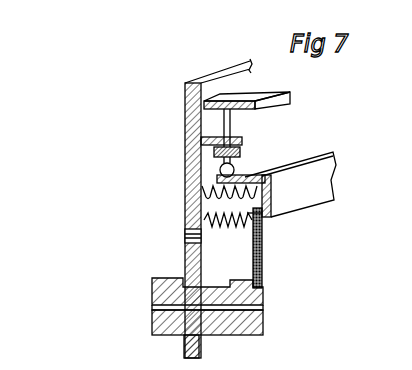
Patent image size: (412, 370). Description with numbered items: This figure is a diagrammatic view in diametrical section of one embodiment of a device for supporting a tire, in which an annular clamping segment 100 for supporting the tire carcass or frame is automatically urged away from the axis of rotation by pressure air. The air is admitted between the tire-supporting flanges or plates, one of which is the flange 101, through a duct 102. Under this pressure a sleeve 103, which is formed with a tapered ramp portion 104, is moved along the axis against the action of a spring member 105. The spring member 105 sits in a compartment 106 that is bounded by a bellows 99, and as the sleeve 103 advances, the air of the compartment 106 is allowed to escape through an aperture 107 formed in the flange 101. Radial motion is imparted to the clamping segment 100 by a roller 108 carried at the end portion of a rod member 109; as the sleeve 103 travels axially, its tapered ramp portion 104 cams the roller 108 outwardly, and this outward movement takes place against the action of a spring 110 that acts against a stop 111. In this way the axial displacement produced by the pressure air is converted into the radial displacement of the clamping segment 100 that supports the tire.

The bellows 99 is at (257, 212).
The annular clamping segment 100 is at (253, 90).
The tire-supporting flange 101 is at (185, 93).
The duct 102 is at (176, 292).
The sleeve 103 is at (273, 182).
The tapered ramp portion 104 is at (336, 155).
The spring member 105 is at (232, 228).
The compartment 106 is at (220, 265).
The aperture 107 is at (190, 238).
The roller 108 is at (217, 180).
The rod member 109 is at (232, 130).
The spring 110 is at (238, 148).
The stop 111 is at (212, 150).